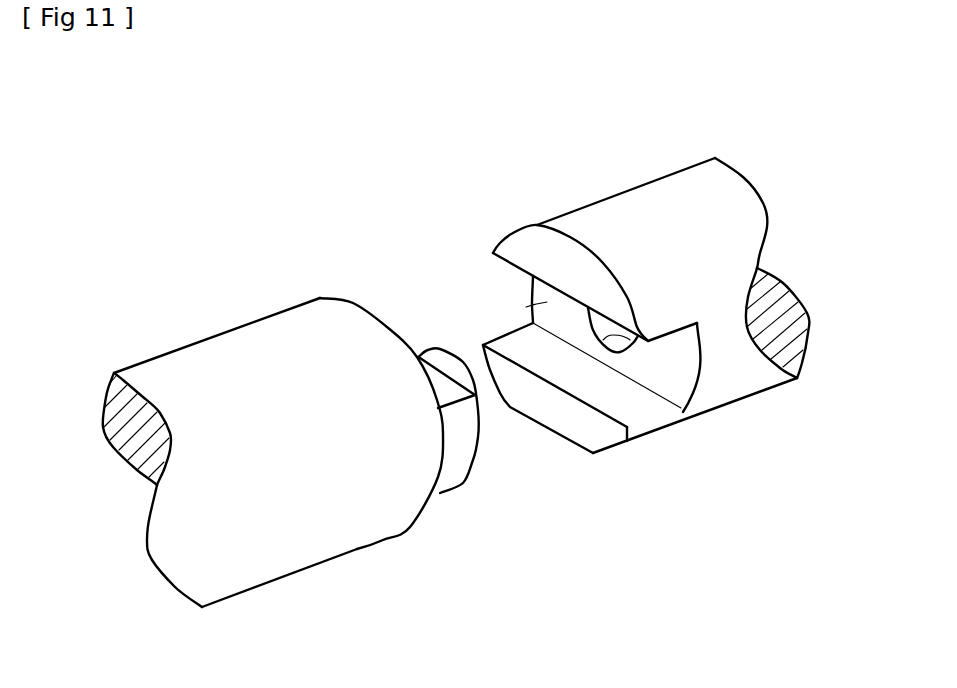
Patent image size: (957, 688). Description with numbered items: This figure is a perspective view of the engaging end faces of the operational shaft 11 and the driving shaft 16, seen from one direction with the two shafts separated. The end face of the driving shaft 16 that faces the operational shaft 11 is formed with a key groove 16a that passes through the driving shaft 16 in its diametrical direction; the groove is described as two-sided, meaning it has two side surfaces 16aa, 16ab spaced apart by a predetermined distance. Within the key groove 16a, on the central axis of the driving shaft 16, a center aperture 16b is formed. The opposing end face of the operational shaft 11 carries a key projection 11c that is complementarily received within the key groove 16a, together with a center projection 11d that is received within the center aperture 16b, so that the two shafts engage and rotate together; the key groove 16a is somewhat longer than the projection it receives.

The operational shaft 11 is at (197, 360).
The key projection 11c is at (457, 465).
The center projection 11d is at (427, 357).
The driving shaft 16 is at (622, 212).
The key groove 16a is at (562, 300).
The first side surface of key groove 16aa is at (630, 407).
The second side surface of key groove 16ab is at (556, 301).
The center aperture 16b is at (603, 340).